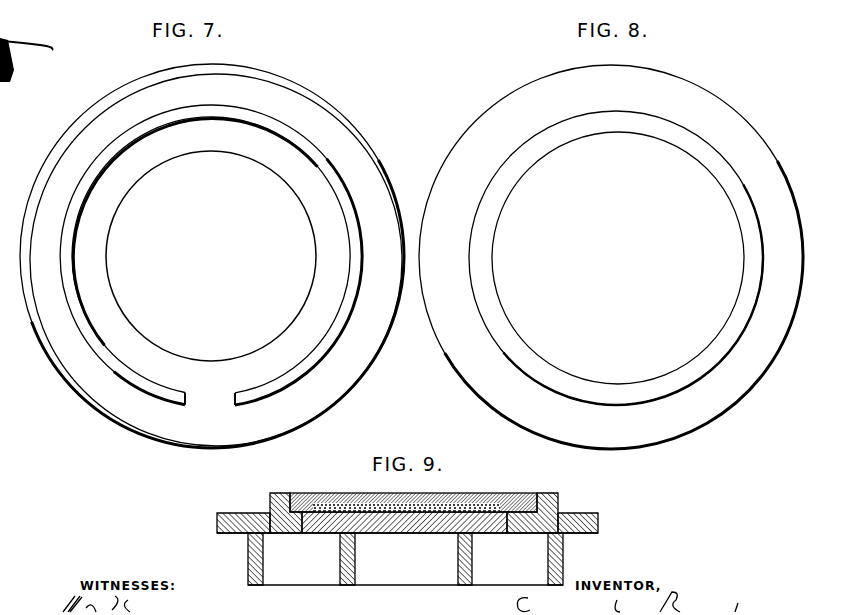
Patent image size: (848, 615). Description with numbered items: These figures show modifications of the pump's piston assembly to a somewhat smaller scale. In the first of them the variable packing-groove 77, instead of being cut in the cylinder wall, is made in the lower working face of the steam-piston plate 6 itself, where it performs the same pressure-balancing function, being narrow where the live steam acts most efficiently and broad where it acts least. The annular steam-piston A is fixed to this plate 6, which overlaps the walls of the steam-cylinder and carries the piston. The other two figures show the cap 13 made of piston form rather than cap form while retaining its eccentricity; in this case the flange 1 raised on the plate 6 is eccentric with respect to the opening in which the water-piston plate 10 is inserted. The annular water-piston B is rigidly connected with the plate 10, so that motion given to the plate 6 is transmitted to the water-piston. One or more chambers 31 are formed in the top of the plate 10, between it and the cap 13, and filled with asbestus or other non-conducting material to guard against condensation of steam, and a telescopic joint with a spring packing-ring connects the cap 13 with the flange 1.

In FIG. 8, the raised flange 1 is at (490, 227).
In FIG. 9, the raised flange 1 is at (414, 500).
In FIG. 7, the steam-piston plate 6 is at (212, 256).
In FIG. 8, the steam-piston plate 6 is at (611, 257).
In FIG. 9, the steam-piston plate 6 is at (407, 512).
In FIG. 9, the water-piston plate 10 is at (404, 535).
In FIG. 8, the cap 13 is at (618, 258).
In FIG. 9, the cap 13 is at (420, 488).
In FIG. 9, the chamber 31 is at (452, 505).
In FIG. 7, the packing-groove 77 is at (110, 98).
In FIG. 7, the steam-piston A is at (252, 117).
In FIG. 9, the steam-piston A is at (412, 559).
In FIG. 9, the water-piston B is at (413, 559).